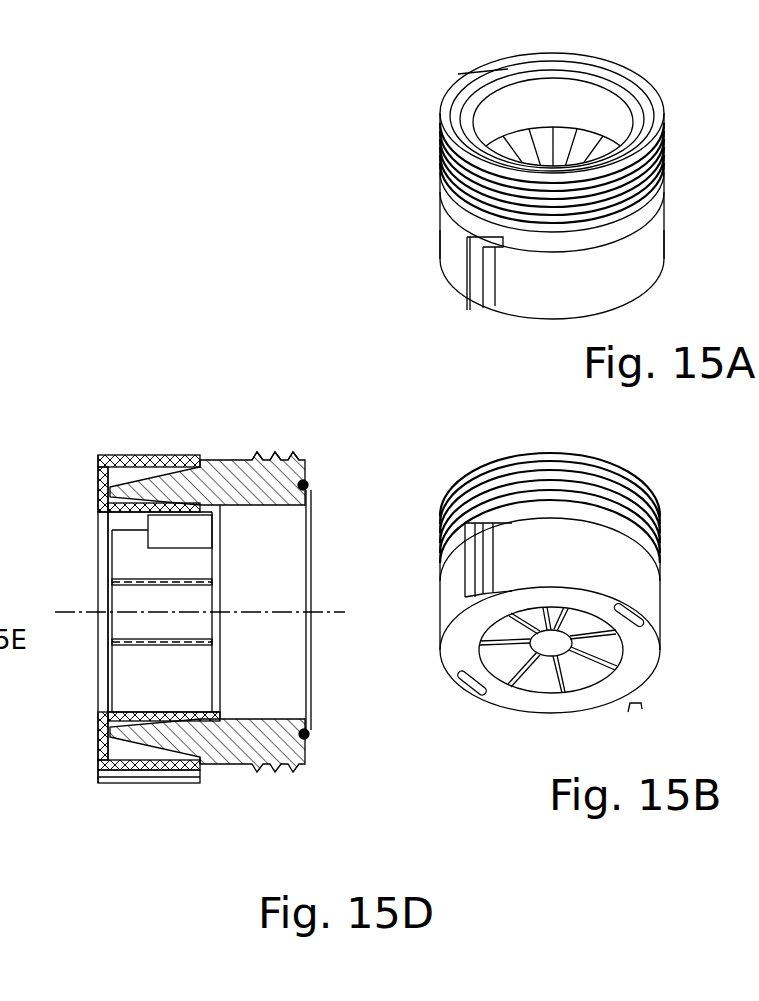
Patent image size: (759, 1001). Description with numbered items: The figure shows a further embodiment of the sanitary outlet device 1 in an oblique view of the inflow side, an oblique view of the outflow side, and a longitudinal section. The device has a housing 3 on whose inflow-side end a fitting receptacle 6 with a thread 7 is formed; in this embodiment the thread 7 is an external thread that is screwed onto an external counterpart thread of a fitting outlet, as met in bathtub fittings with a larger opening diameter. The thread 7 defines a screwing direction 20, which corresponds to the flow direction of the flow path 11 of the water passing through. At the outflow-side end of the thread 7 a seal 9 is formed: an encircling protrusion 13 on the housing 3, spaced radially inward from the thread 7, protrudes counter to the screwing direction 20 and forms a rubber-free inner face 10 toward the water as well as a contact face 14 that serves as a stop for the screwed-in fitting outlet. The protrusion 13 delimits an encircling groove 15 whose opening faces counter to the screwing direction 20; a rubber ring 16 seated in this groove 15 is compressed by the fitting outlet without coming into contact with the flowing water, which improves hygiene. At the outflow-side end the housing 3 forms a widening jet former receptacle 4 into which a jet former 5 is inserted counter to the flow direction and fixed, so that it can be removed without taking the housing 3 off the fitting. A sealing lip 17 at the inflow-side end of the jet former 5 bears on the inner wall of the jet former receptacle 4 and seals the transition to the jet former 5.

In FIG. 15A, the sanitary outlet device 1 is at (352, 167).
In FIG. 15B, the sanitary outlet device 1 is at (443, 430).
In FIG. 15D, the sanitary outlet device 1 is at (200, 402).
In FIG. 15A, the housing 3 is at (456, 211).
In FIG. 15B, the housing 3 is at (640, 530).
In FIG. 15D, the housing 3 is at (212, 768).
In FIG. 15D, the jet former receptacle 4 is at (120, 724).
In FIG. 15A, the jet former 5 is at (545, 292).
In FIG. 15B, the jet former 5 is at (537, 677).
In FIG. 15D, the jet former 5 is at (133, 502).
In FIG. 15D, the fitting receptacle 6 is at (308, 805).
In FIG. 15D, the thread 7 is at (276, 458).
In FIG. 15A, the seal 9 is at (458, 131).
In FIG. 15D, the seal 9 is at (320, 737).
In FIG. 15A, the rubber-free inner face 10 is at (577, 86).
In FIG. 15D, the rubber-free inner face 10 is at (308, 705).
In FIG. 15A, the flow path 11 is at (469, 79).
In FIG. 15B, the flow path 11 is at (563, 678).
In FIG. 15D, the flow path 11 is at (197, 605).
In FIG. 15A, the protrusion 13 is at (555, 78).
In FIG. 15D, the protrusion 13 is at (308, 727).
In FIG. 15A, the contact face 14 is at (627, 130).
In FIG. 15D, the contact face 14 is at (309, 500).
In FIG. 15D, the groove 15 is at (293, 478).
In FIG. 15A, the rubber ring 16 is at (466, 117).
In FIG. 15D, the rubber ring 16 is at (309, 650).
In FIG. 15D, the sealing lip 17 is at (212, 756).
In FIG. 15A, the screwing direction 20 is at (680, 52).
In FIG. 15D, the screwing direction 20 is at (309, 573).